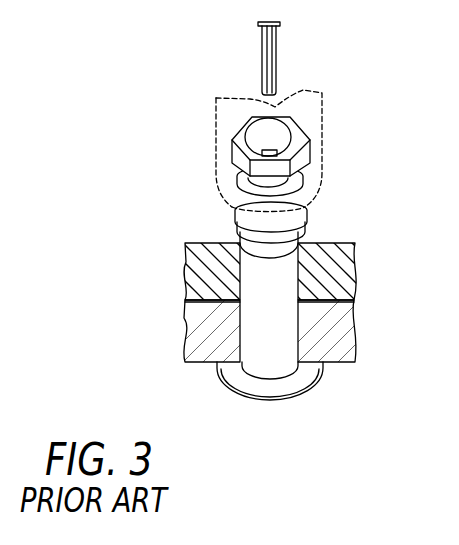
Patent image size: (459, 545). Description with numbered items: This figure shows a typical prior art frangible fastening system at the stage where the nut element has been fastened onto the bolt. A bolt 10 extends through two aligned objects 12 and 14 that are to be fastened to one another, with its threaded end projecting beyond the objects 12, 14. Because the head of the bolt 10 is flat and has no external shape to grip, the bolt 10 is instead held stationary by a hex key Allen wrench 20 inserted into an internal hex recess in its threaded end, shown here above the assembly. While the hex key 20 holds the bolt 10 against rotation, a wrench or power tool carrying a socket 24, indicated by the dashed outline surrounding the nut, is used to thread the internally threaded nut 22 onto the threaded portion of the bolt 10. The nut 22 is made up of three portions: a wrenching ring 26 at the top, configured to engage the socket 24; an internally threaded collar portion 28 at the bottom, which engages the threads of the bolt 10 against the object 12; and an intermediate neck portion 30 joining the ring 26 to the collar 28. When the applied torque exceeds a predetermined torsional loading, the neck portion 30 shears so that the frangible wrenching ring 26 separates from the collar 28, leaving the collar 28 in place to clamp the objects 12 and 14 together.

The bolt 10 is at (267, 338).
The object 12 is at (198, 248).
The object 14 is at (207, 350).
The hex key Allen wrench 20 is at (268, 62).
The nut 22 is at (262, 174).
The socket 24 is at (215, 133).
The wrenching ring 26 is at (300, 137).
The internally threaded collar portion 28 is at (291, 208).
The intermediate neck portion 30 is at (265, 191).